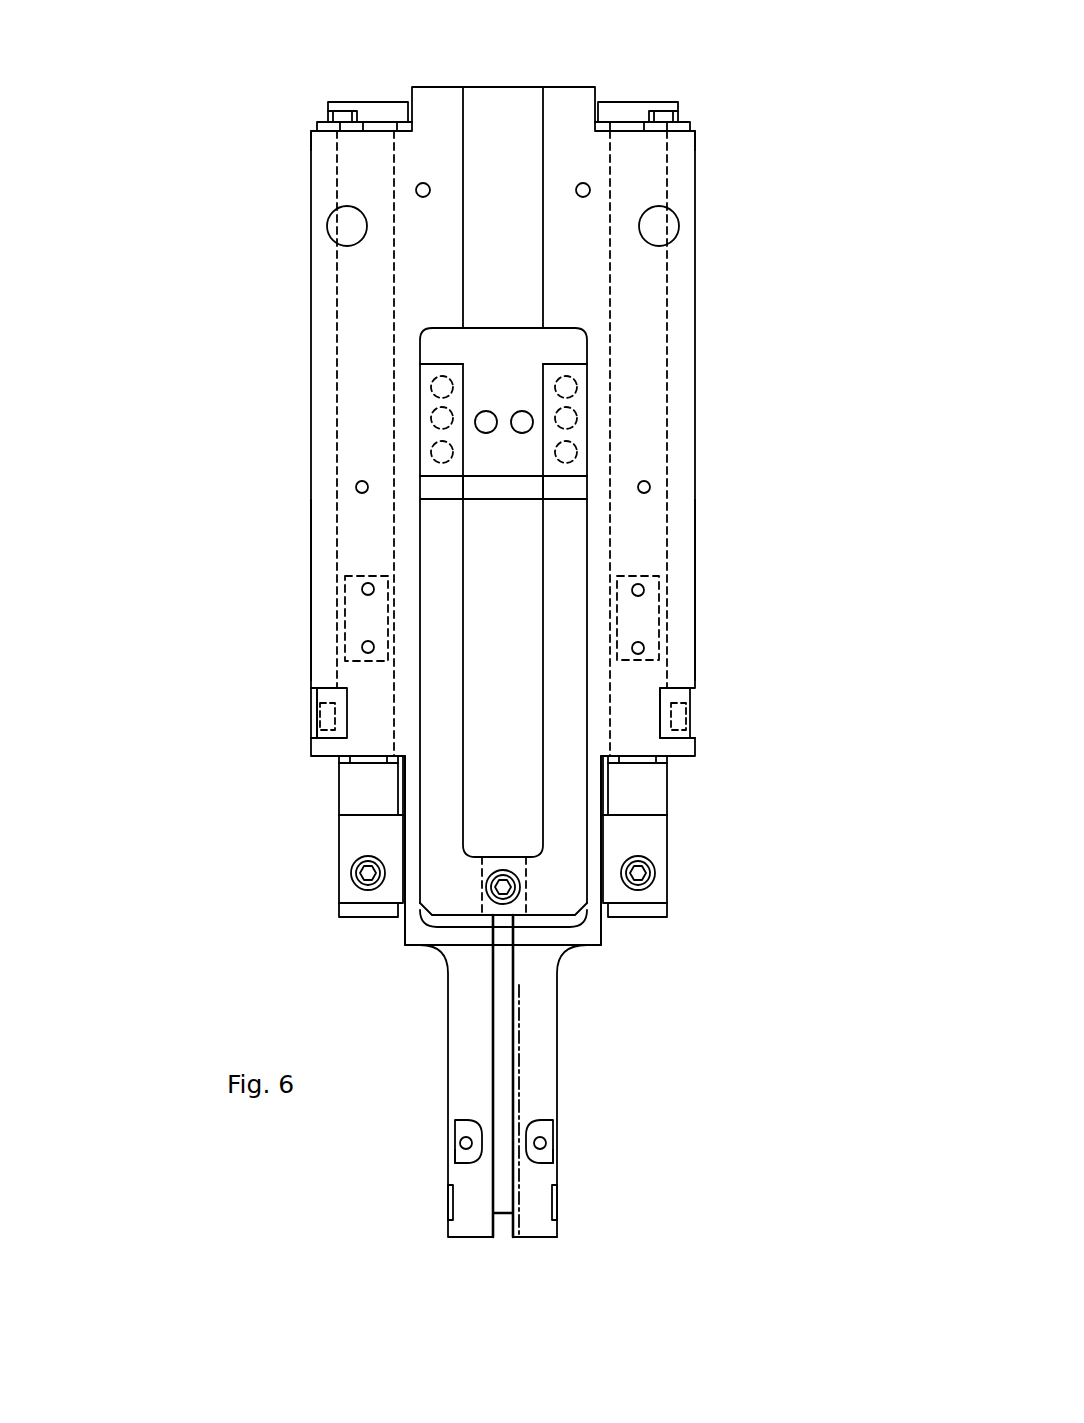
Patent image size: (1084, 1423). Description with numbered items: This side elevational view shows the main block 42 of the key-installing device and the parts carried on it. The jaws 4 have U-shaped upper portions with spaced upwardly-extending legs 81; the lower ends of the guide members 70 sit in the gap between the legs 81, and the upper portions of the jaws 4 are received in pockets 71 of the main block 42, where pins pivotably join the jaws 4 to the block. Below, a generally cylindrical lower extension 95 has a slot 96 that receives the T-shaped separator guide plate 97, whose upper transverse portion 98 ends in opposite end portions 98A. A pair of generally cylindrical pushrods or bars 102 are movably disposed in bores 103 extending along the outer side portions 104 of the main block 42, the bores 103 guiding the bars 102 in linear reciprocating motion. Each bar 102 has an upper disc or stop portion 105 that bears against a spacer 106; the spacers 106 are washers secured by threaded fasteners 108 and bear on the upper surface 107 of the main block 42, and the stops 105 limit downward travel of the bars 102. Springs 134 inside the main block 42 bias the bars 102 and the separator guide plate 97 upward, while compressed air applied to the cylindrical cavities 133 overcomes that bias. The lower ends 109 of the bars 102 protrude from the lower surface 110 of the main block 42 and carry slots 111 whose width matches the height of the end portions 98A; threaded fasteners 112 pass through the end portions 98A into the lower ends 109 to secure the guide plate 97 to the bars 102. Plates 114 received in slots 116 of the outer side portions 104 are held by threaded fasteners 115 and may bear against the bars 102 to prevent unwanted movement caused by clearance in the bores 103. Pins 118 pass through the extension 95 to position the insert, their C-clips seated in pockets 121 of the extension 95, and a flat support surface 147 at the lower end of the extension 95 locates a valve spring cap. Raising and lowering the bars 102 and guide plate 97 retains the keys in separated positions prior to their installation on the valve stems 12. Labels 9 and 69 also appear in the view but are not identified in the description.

The jaws 4 is at (578, 665).
The section view direction 9 is at (519, 990).
The valve stem 12 is at (627, 1292).
The main block 42 is at (697, 342).
The upper mounting block 69 is at (527, 115).
The guide members 70 is at (513, 640).
The pockets 71 is at (587, 525).
The upwardly-extending legs 81 is at (432, 556).
The lower extension 95 is at (557, 1053).
The slot 96 is at (513, 966).
The separator guide plate 97 is at (492, 1052).
The upper transverse portion 98 is at (655, 842).
The opposite end portions 98A is at (347, 837).
The pushrods or bars 102 is at (340, 797).
The bores 103 is at (340, 773).
The outer side portions 104 is at (320, 626).
The upper disc or stop portion 105 is at (340, 105).
The spacer 106 is at (318, 126).
The upper surface 107 is at (312, 130).
The threaded fasteners 108 is at (330, 118).
The lower ends 109 is at (338, 810).
The lower surface 110 is at (337, 760).
The slots 111 is at (357, 905).
The threaded fasteners 112 is at (347, 875).
The plates or bars 114 is at (317, 712).
The threaded fasteners 115 is at (320, 710).
The slots 116 is at (317, 738).
The pins 118 is at (462, 1142).
The pockets 121 is at (453, 1157).
The cylindrical cavities 133 is at (352, 352).
The springs 134 is at (650, 295).
The flat support surface 147 is at (535, 1238).